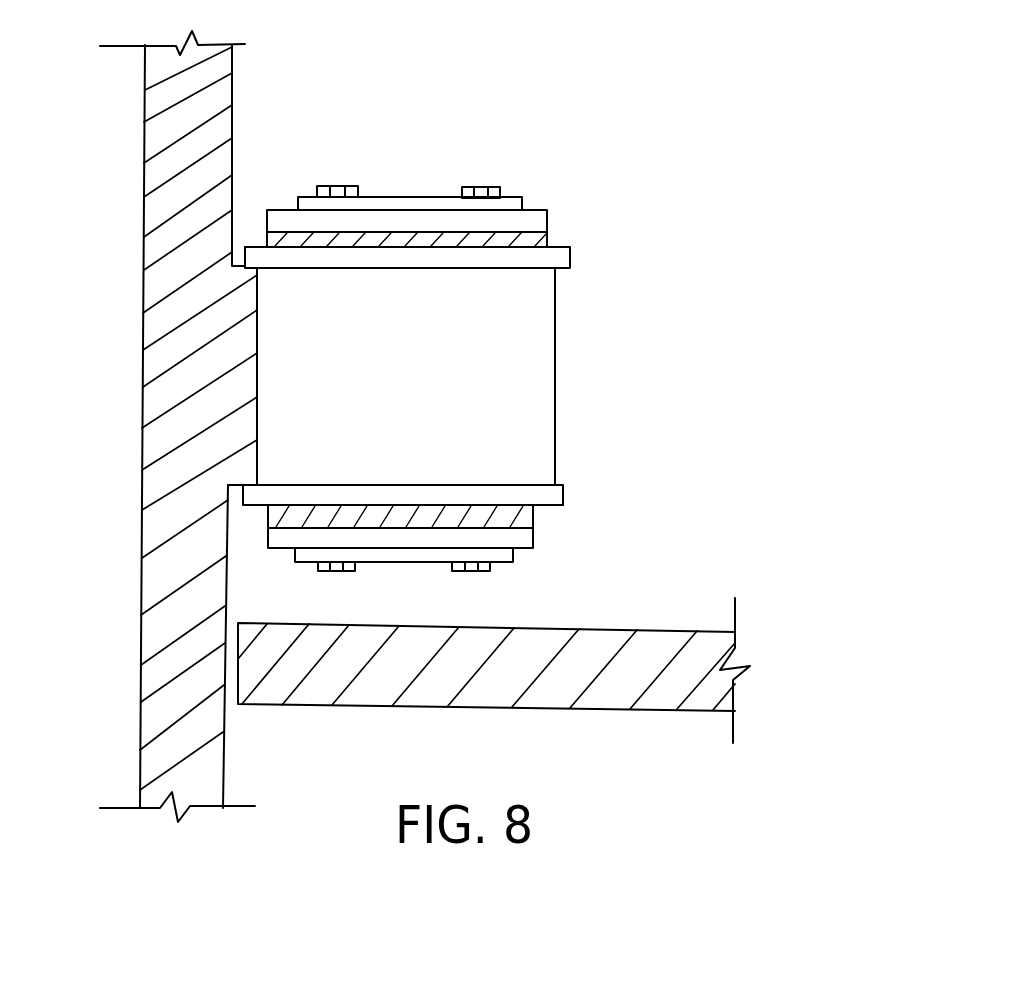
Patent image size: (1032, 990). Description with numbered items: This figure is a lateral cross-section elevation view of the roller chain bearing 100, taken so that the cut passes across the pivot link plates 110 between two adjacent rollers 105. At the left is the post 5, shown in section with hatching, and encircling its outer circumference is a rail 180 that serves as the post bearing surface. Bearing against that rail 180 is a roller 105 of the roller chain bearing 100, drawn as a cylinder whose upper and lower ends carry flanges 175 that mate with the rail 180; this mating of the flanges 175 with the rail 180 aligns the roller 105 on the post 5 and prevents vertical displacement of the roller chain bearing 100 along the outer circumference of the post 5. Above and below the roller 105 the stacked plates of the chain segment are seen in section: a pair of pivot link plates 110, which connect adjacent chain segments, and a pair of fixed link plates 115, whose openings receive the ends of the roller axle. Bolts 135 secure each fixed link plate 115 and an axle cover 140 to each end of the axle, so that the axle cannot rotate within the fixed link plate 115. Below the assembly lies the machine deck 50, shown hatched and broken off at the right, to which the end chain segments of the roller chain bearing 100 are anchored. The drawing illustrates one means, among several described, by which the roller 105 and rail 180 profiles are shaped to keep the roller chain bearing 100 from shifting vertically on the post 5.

The post 5 is at (177, 517).
The machine deck 50 is at (608, 640).
The roller chain bearing 100 is at (820, 376).
The roller 105 is at (537, 380).
The pivot link plate 110 is at (543, 243).
The fixed link plate 115 is at (543, 215).
The bolt 135 is at (353, 178).
The axle cover 140 is at (508, 205).
The flange 175 is at (570, 255).
The rail 180 is at (257, 380).